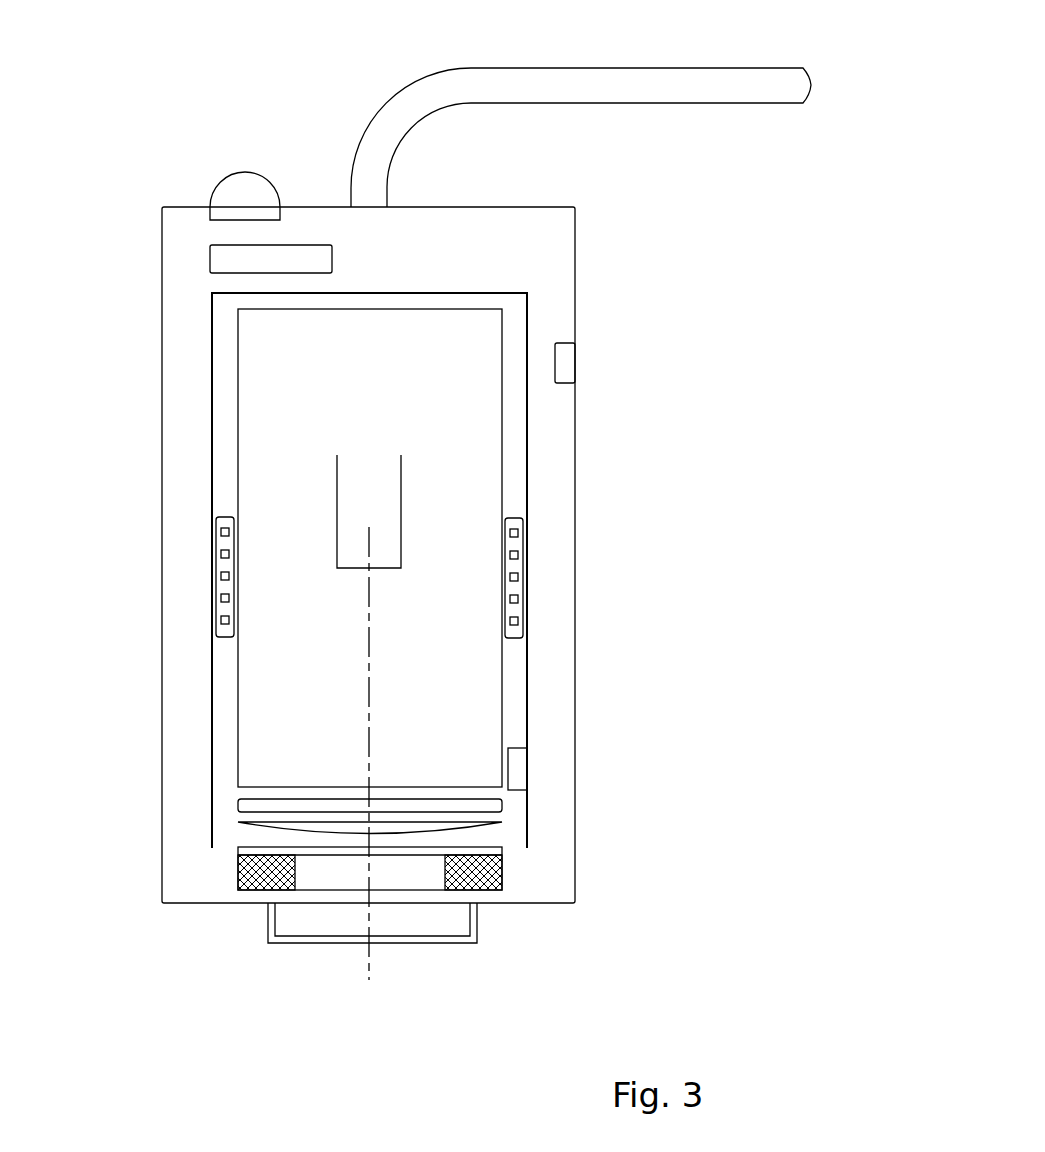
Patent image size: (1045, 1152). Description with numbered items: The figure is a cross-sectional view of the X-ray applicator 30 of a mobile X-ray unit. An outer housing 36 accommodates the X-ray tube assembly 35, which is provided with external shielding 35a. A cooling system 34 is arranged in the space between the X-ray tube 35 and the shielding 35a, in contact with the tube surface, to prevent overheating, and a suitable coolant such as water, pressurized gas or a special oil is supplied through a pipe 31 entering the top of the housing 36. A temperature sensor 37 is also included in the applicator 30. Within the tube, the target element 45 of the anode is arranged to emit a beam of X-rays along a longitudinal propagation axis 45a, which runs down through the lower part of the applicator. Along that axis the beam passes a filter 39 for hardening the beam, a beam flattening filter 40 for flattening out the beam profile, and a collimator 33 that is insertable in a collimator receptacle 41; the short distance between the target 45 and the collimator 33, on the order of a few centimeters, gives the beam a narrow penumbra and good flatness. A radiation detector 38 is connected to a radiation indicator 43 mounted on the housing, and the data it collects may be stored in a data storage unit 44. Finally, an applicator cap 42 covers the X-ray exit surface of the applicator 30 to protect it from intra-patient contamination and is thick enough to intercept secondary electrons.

The X-ray applicator 30 is at (115, 50).
The pipe 31 is at (662, 68).
The collimator 33 is at (238, 878).
The cooling system 34 is at (212, 610).
The X-ray tube assembly 35 is at (500, 430).
The external shielding 35a is at (527, 475).
The outer housing 36 is at (577, 259).
The temperature sensor 37 is at (565, 362).
The radiation detector 38 is at (518, 770).
The filter 39 is at (502, 807).
The beam flattening filter 40 is at (502, 823).
The collimator receptacle 41 is at (502, 847).
The applicator cap 42 is at (477, 925).
The radiation indicator 43 is at (245, 180).
The data storage unit 44 is at (210, 259).
The target element 45 is at (401, 475).
The longitudinal propagation axis 45a is at (369, 670).